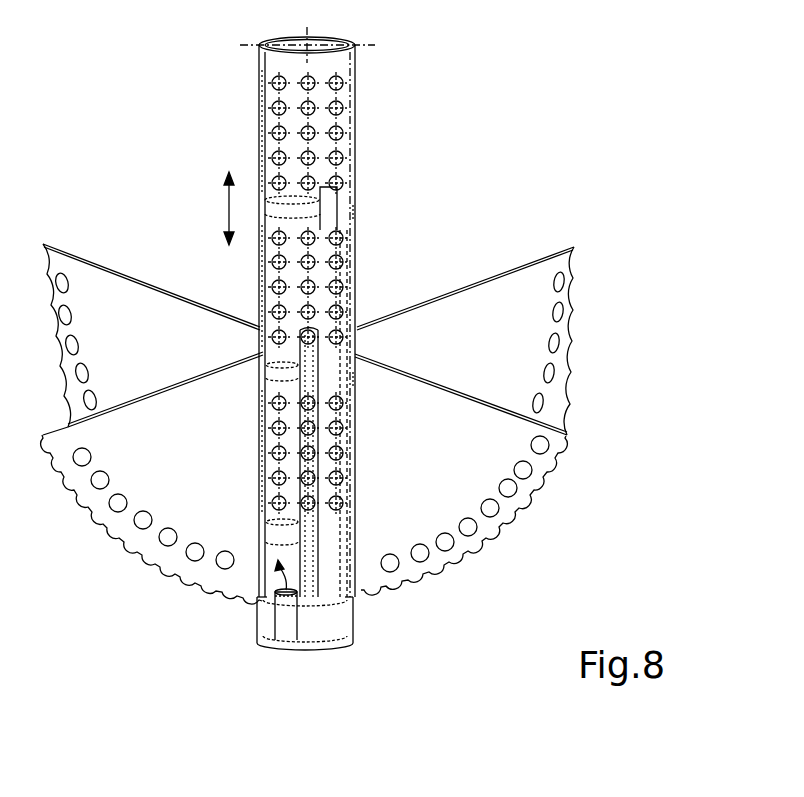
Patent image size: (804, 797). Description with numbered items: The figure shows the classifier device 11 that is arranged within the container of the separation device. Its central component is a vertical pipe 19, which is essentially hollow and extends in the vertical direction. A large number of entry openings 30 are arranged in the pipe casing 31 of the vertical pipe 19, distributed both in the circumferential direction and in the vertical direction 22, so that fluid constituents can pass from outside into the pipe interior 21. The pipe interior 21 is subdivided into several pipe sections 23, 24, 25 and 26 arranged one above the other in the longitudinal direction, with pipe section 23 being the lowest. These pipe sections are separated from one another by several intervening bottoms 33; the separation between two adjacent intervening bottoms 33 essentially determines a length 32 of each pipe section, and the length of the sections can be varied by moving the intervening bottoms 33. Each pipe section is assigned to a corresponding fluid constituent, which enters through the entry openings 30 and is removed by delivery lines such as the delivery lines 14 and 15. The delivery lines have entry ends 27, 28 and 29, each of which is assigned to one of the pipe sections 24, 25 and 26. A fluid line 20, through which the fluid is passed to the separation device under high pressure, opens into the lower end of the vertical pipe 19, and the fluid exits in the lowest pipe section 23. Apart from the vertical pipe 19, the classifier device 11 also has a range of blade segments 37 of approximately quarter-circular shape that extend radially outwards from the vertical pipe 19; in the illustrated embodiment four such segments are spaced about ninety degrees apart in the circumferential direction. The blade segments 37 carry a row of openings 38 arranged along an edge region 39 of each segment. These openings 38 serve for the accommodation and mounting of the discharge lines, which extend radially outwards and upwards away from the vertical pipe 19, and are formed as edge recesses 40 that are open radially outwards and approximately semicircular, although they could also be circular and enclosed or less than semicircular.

The classifier device 11 is at (490, 193).
The delivery line 14 is at (367, 211).
The delivery line 15 is at (385, 359).
The vertical pipe 19 is at (357, 157).
The fluid line 20 is at (285, 620).
The pipe interior 21 is at (296, 45).
The vertical direction 22 is at (226, 210).
The pipe section 23 is at (377, 601).
The pipe section 24 is at (377, 451).
The pipe section 25 is at (377, 269).
The pipe section 26 is at (377, 122).
The entry end 27 is at (327, 174).
The entry end 28 is at (303, 328).
The entry end 29 is at (270, 520).
The entry openings 30 is at (334, 77).
The pipe casing 31 is at (262, 71).
The length 32 is at (367, 642).
The intervening bottoms 33 is at (283, 207).
The blade segments 37 is at (503, 287).
The openings 38 is at (493, 508).
The edge region 39 is at (575, 313).
The edge recesses 40 is at (553, 472).